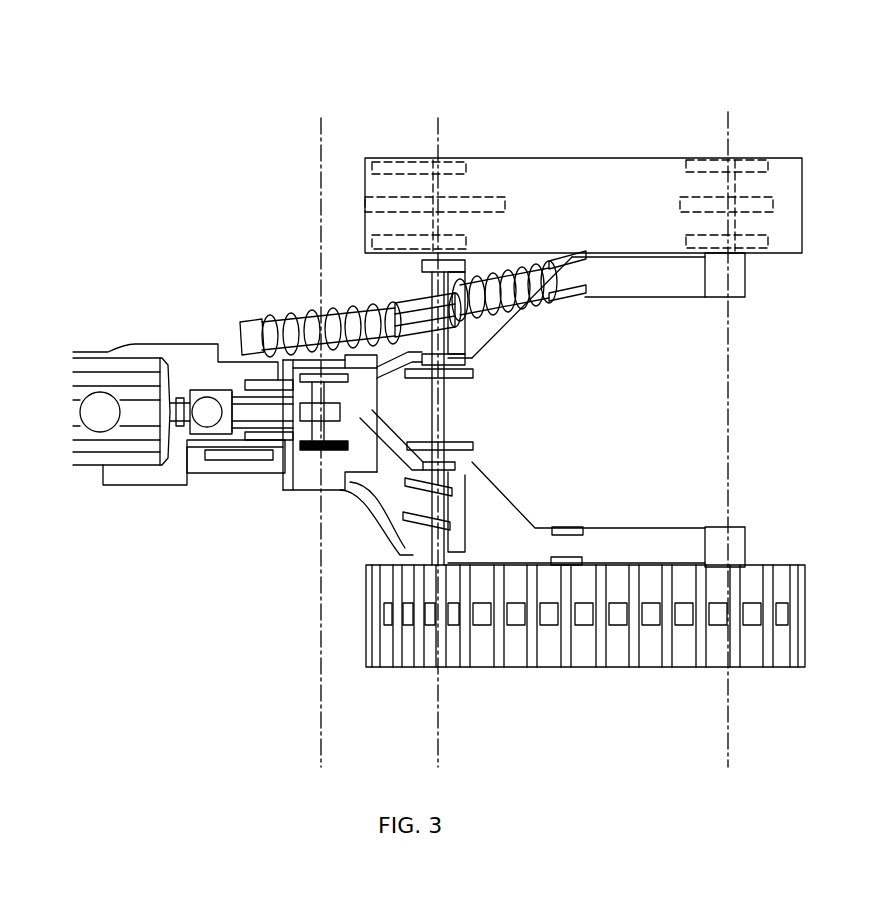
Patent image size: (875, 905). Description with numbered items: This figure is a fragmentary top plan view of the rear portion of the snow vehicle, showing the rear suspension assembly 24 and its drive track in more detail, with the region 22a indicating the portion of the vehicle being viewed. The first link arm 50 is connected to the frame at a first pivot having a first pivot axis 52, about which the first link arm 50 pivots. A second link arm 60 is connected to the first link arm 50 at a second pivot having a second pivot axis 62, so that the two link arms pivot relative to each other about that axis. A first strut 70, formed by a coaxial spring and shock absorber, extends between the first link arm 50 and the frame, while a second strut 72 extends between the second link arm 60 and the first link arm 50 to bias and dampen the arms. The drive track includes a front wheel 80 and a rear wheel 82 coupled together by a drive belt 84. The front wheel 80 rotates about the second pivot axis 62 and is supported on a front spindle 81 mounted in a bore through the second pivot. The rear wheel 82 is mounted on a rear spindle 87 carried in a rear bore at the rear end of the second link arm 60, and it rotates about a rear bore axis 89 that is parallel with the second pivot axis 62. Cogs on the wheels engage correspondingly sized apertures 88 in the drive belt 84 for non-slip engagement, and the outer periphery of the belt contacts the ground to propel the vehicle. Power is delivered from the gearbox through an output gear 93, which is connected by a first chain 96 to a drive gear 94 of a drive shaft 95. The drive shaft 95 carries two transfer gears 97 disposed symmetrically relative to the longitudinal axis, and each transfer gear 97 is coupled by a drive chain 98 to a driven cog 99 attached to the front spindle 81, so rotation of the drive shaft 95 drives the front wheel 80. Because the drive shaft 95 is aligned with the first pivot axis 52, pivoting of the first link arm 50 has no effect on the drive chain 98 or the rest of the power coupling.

The drive assembly 22a is at (138, 99).
The rear suspension assembly 24 is at (256, 208).
The first link arm 50 is at (388, 486).
The first pivot axis 52 is at (321, 695).
The second link arm 60 is at (628, 528).
The second pivot axis 62 is at (438, 695).
The first strut 70 is at (263, 317).
The second strut 72 is at (538, 302).
The front wheel 80 is at (480, 172).
The front spindle 81 is at (446, 456).
The rear wheel 82 is at (695, 170).
The drive belt 84 is at (578, 165).
The rear spindle 87 is at (732, 190).
The apertures 88 is at (548, 617).
The rear bore axis 89 is at (728, 693).
The output gear 93 is at (207, 457).
The drive gear 94 is at (325, 452).
The drive shaft 95 is at (278, 432).
The first chain 96 is at (292, 465).
The transfer gears 97 is at (307, 318).
The drive chain 98 is at (403, 399).
The driven cog 99 is at (468, 380).